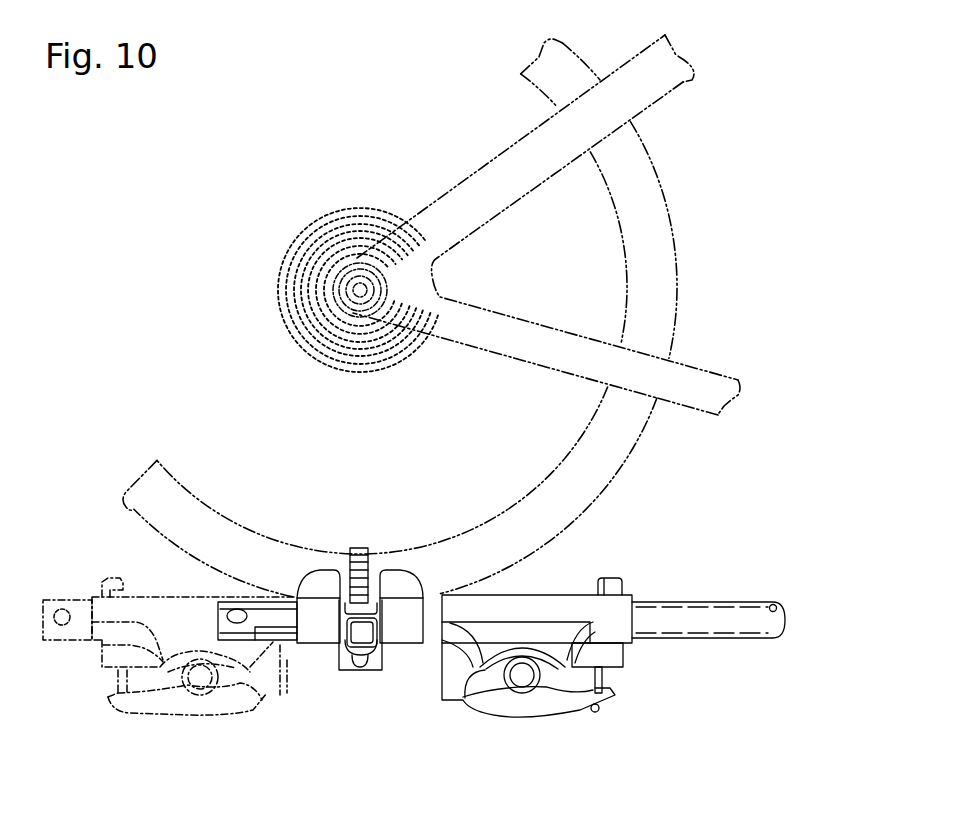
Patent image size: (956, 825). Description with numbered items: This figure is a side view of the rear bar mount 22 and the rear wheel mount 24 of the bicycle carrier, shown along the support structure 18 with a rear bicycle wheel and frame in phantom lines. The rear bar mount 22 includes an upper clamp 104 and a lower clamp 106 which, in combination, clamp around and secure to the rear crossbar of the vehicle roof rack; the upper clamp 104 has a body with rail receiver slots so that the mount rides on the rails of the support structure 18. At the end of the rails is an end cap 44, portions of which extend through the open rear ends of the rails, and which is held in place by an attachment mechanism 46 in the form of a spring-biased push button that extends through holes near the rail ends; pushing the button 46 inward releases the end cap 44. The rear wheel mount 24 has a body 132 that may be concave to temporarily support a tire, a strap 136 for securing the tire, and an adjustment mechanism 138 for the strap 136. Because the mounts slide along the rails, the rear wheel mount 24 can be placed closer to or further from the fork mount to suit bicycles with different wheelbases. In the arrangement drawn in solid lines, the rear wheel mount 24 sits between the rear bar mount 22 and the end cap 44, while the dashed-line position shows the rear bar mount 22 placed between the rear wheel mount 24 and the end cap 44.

The support structure 18 is at (783, 619).
The rear bar mount 22 is at (98, 679).
The rear wheel mount 24 is at (355, 679).
The end cap 44 is at (60, 641).
The attachment mechanism 46 is at (62, 609).
The upper clamp 104 is at (147, 593).
The lower clamp 106 is at (159, 719).
The body 132 is at (405, 612).
The strap 136 is at (358, 556).
The adjustment mechanism 138 is at (377, 632).